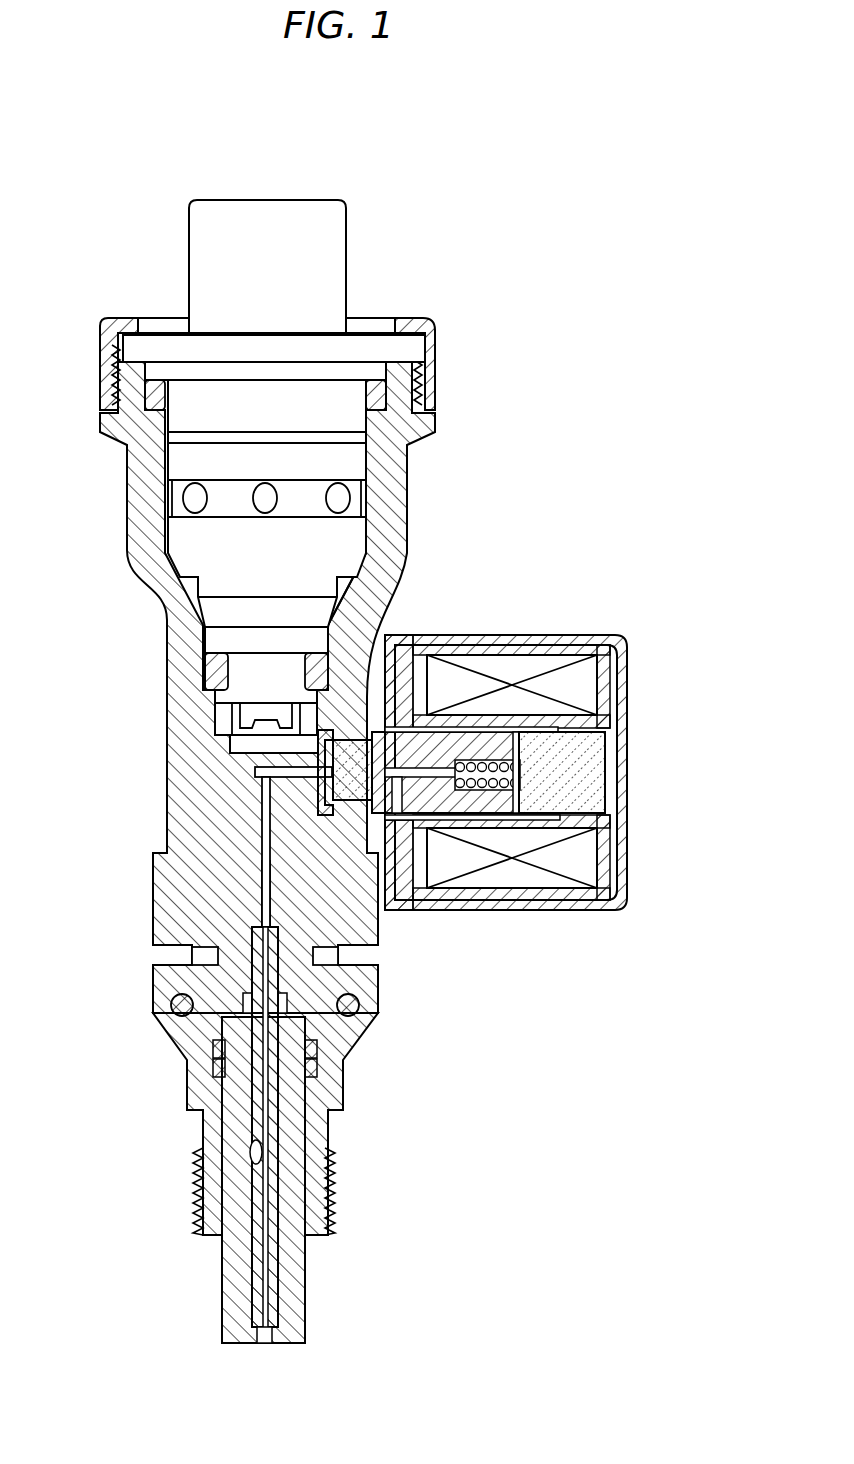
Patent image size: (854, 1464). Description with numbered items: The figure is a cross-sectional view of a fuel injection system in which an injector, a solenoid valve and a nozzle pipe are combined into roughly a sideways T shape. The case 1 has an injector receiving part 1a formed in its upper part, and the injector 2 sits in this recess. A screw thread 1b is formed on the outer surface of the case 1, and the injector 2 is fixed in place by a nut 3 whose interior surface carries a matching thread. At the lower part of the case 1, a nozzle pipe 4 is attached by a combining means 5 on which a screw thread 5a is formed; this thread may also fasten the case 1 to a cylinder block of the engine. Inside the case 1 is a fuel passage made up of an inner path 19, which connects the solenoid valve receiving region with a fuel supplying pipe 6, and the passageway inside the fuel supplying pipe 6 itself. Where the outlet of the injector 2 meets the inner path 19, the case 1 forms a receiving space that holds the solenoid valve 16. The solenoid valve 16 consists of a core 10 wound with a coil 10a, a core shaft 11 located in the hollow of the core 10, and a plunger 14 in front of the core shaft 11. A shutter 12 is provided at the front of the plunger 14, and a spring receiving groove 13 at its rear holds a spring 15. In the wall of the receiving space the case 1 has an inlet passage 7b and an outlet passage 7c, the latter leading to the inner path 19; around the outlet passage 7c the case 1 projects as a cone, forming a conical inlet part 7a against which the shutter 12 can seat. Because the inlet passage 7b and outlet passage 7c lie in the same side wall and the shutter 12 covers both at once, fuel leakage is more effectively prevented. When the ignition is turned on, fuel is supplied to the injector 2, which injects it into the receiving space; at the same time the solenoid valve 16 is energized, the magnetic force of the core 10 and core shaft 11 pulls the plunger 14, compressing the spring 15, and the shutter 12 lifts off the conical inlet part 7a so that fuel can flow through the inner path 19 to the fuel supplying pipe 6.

The case 1 is at (187, 670).
The injector receiving part 1a is at (364, 576).
The screw thread 1b is at (428, 368).
The injector 2 is at (320, 395).
The nut 3 is at (428, 325).
The nozzle pipe 4 is at (238, 1280).
The combining means 5 is at (193, 1047).
The screw thread 5a is at (193, 1200).
The fuel supplying pipe 6 is at (255, 1162).
The conical inlet part 7a is at (272, 785).
The inlet passage 7b is at (290, 750).
The outlet passage 7c is at (330, 772).
The core 10 is at (628, 680).
The coil 10a is at (518, 668).
The core shaft 11 is at (587, 770).
The shutter 12 is at (390, 877).
The spring receiving groove 13 is at (505, 790).
The plunger 14 is at (463, 807).
The spring 15 is at (467, 762).
The solenoid valve 16 is at (516, 759).
The inner path 19 is at (267, 885).